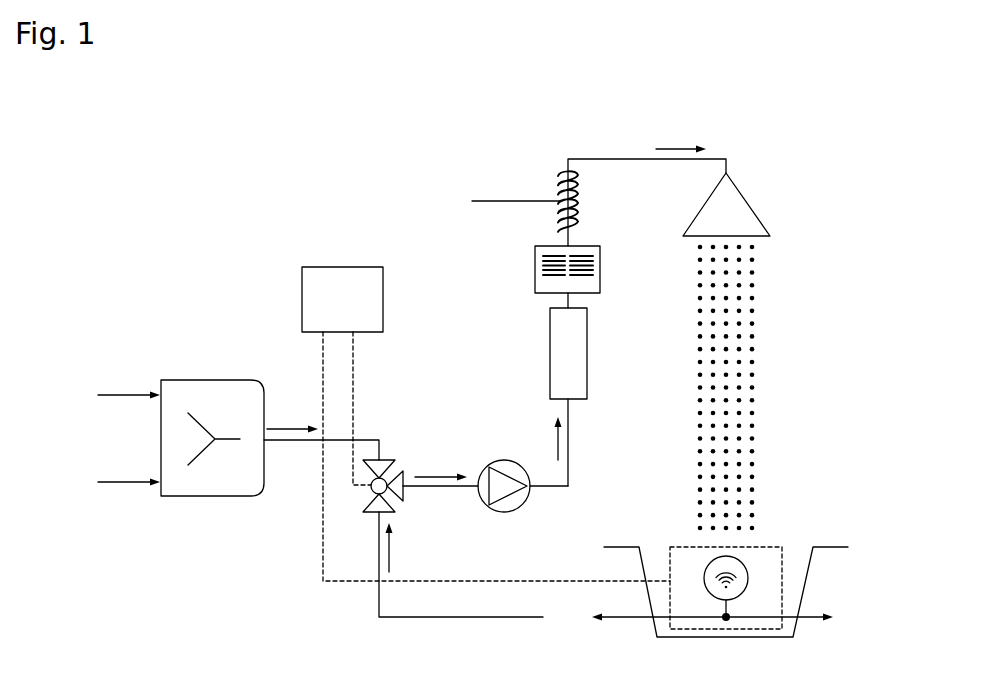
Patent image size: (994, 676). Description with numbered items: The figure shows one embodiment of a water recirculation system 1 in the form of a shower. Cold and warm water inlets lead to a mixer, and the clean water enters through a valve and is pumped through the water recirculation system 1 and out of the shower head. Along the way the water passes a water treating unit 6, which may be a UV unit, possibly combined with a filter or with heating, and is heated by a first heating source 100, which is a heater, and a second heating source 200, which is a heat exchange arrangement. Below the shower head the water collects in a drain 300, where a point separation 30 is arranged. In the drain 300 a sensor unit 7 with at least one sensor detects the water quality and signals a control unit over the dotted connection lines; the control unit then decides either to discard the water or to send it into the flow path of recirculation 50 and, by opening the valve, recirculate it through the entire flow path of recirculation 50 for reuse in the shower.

The water recirculation system 1 is at (354, 150).
The water treating unit 6 is at (550, 339).
The first heating source 100 is at (535, 275).
The second heating source 200 is at (560, 182).
The drain 300 is at (835, 547).
The sensor unit 7 is at (782, 547).
The point separation 30 is at (724, 614).
The flow path of recirculation 50 is at (606, 571).